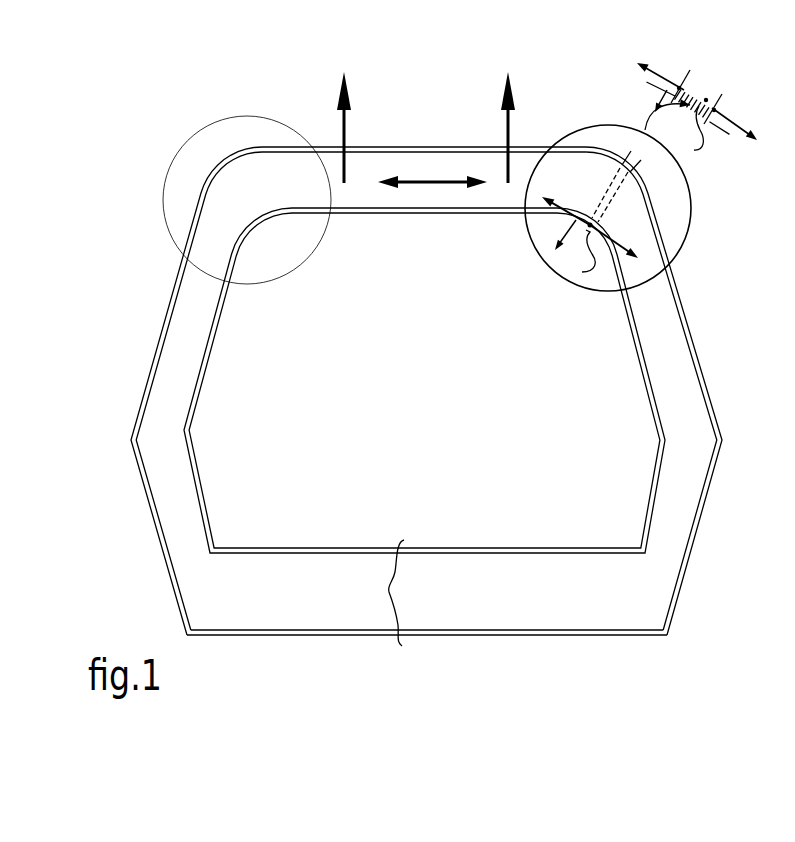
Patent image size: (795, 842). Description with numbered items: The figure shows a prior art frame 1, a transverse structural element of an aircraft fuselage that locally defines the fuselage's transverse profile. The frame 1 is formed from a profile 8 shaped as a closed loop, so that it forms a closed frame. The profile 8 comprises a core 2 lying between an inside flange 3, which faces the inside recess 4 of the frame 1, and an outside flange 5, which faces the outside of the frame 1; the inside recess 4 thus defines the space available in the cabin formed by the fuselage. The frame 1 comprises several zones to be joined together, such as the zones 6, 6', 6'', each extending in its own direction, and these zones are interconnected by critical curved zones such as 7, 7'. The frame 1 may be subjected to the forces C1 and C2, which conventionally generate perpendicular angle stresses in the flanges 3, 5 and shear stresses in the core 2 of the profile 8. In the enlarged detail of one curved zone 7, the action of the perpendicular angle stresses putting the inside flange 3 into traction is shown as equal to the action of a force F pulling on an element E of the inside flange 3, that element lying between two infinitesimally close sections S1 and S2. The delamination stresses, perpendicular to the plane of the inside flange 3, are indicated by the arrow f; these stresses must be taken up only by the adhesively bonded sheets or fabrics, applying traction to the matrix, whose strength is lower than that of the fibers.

The frame 1 is at (712, 508).
The core 2 is at (464, 601).
The inside flange 3 is at (450, 548).
The inside recess 4 is at (434, 408).
The outside flange 5 is at (478, 636).
The zone to be joined 6 is at (671, 391).
The zone to be joined 6' is at (424, 114).
The zone to be joined 6'' is at (170, 391).
The critical curved zone 7 is at (625, 188).
The critical curved zone 7' is at (255, 226).
The profile 8 is at (388, 593).
The force C1 is at (426, 115).
The force C2 is at (432, 171).
The section S1 is at (687, 120).
The section S2 is at (650, 135).
The element E is at (632, 191).
The force F is at (656, 149).
The arrow f is at (607, 167).